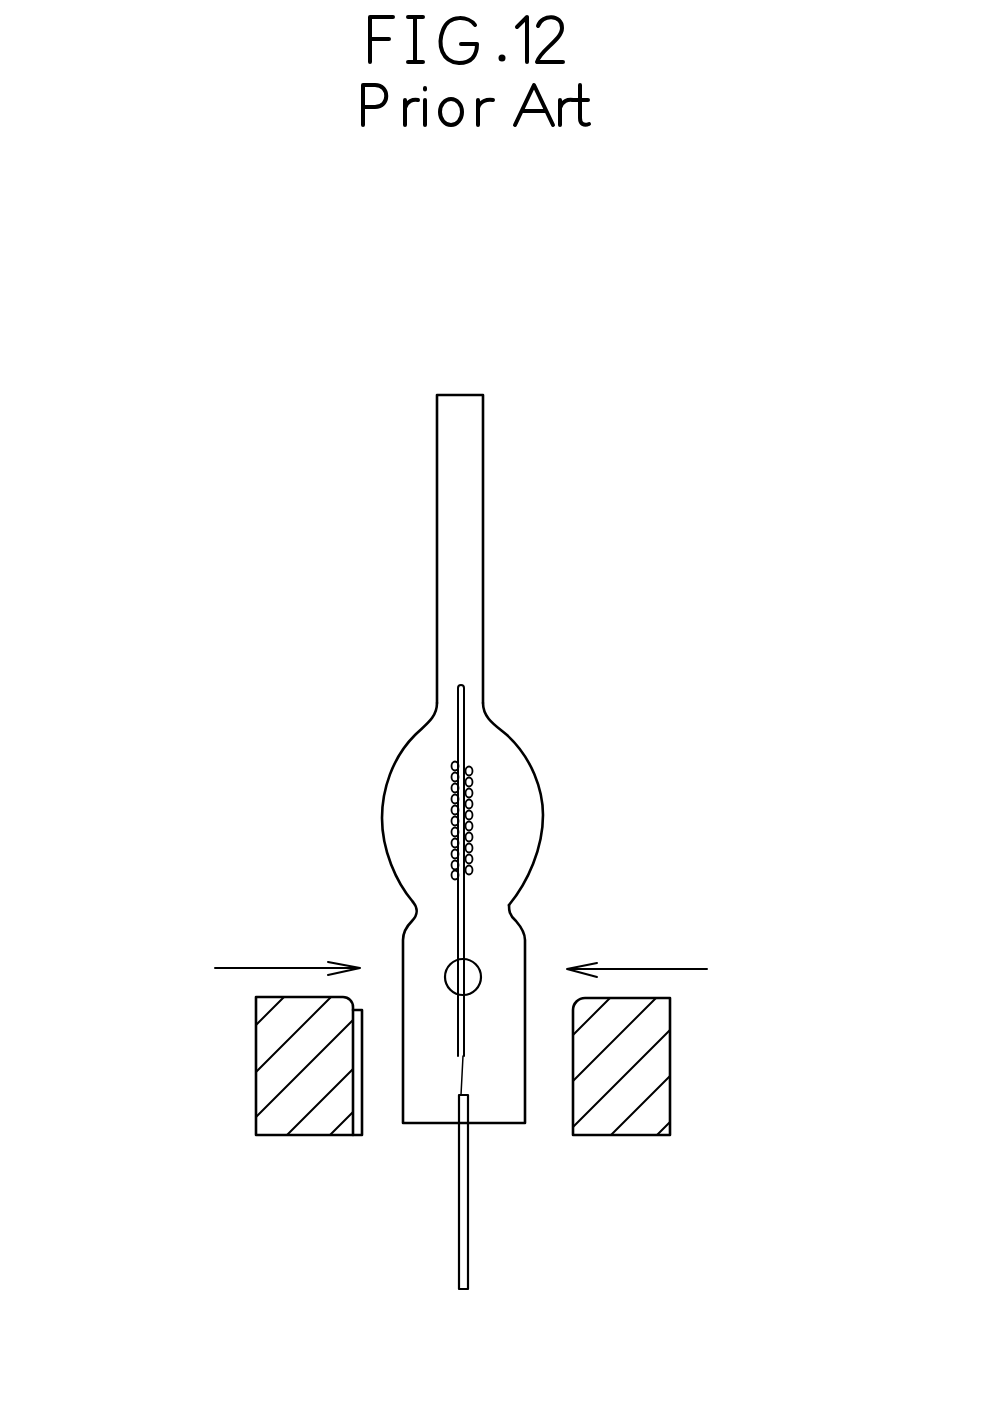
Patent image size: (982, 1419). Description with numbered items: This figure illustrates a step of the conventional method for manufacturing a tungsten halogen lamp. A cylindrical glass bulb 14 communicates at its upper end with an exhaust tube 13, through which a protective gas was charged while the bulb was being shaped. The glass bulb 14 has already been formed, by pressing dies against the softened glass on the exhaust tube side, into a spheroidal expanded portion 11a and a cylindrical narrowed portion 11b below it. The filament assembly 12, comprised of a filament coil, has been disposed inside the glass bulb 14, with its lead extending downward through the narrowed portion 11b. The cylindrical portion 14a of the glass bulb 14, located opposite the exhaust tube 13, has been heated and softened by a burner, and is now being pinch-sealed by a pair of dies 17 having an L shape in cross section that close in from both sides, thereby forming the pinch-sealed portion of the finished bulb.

The expanded portion 11a is at (468, 761).
The narrowed portion 11b is at (485, 972).
The filament assembly 12 is at (470, 837).
The exhaust tube 13 is at (472, 618).
The glass bulb 14 is at (520, 748).
The cylindrical portion 14a is at (503, 975).
The dies 17 is at (262, 1080).